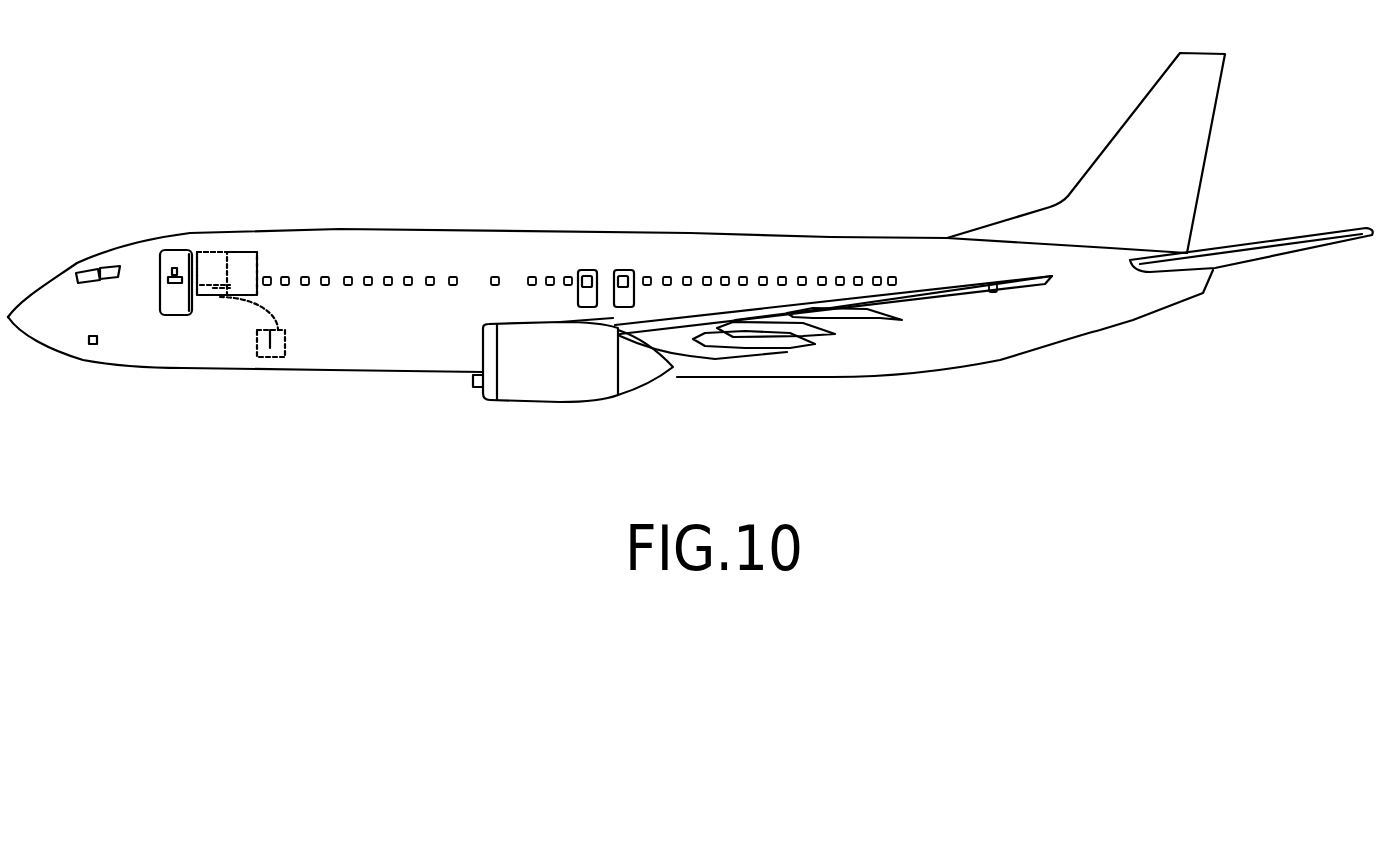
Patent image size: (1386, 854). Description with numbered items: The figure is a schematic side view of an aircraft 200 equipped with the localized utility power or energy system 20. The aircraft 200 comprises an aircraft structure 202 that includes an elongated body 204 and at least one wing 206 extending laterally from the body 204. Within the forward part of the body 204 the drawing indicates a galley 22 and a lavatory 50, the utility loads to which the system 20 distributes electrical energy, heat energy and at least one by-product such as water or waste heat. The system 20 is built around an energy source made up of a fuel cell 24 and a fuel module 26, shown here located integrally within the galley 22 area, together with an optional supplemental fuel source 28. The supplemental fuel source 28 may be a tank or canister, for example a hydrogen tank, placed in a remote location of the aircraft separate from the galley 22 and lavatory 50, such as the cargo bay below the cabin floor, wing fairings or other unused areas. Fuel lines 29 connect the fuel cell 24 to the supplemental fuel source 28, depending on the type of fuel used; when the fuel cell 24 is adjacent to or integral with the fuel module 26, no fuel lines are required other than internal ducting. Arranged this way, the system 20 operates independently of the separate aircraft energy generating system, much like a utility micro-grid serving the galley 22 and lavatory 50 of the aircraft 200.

The aircraft 200 is at (792, 143).
The aircraft structure 202 is at (420, 228).
The elongated body 204 is at (377, 352).
The wing 206 is at (943, 290).
The localized utility power or energy system 20 is at (221, 234).
The galley 22 is at (210, 258).
The lavatory 50 is at (248, 252).
The fuel module 26 is at (213, 288).
The fuel cell 24 is at (218, 300).
The fuel lines 29 is at (275, 306).
The supplemental fuel source 28 is at (273, 362).